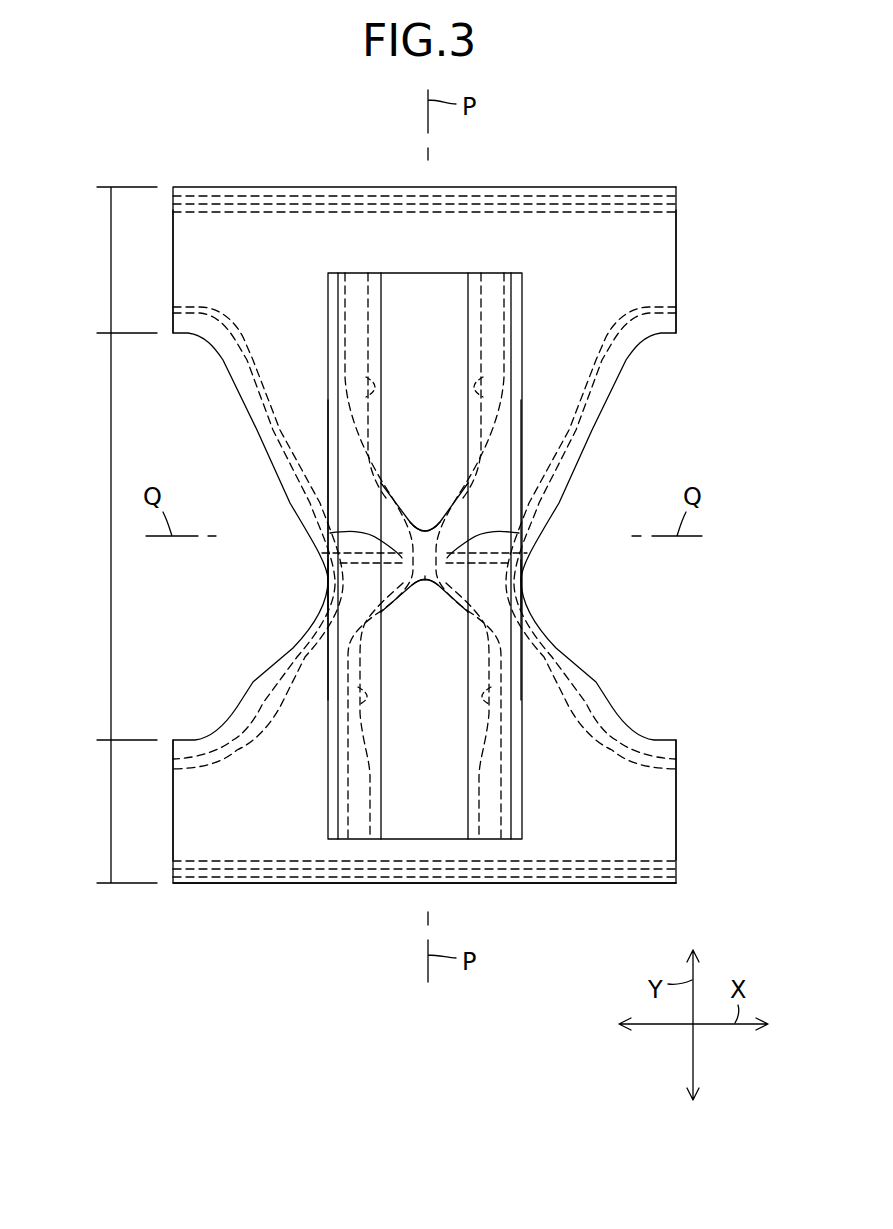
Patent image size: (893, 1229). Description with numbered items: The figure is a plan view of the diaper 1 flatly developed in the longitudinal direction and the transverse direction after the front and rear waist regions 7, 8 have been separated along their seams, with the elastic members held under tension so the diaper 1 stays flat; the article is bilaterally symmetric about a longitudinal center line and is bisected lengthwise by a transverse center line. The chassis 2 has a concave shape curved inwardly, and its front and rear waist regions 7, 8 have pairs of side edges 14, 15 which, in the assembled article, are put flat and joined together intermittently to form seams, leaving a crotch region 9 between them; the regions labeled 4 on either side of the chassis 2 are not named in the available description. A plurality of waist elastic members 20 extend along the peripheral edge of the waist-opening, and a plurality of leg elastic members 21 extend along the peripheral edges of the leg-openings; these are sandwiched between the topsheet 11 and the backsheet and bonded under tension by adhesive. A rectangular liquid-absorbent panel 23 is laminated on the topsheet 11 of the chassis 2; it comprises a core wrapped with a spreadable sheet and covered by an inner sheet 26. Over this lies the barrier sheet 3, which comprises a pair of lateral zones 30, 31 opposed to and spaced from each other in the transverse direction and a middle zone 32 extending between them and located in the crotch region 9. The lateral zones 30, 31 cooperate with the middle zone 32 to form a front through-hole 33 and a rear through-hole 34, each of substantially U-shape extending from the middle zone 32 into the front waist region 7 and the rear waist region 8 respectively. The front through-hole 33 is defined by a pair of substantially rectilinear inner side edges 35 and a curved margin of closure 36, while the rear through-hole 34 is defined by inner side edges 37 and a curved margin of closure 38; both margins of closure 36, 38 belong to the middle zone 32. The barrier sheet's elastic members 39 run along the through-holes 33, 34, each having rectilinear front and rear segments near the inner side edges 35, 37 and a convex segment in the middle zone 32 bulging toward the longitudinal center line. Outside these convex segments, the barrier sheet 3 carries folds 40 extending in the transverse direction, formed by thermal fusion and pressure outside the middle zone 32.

The diaper 1 is at (229, 109).
The chassis 2 is at (205, 163).
The barrier sheet 3 is at (423, 519).
The side flap 4 is at (348, 477).
The front waist region 7 is at (111, 808).
The rear waist region 8 is at (111, 260).
The crotch region 9 is at (111, 550).
The topsheet 11 is at (240, 850).
The side edges of front waist region 14 is at (178, 814).
The side edges of rear waist region 15 is at (176, 250).
The waist elastic members 20 is at (541, 205).
The leg elastic members 21 is at (268, 695).
The liquid-absorbent panel 23 is at (413, 259).
The inner sheet 26 is at (396, 282).
The lateral zone 30 is at (356, 581).
The lateral zone 31 is at (493, 581).
The middle zone 32 is at (421, 584).
The front through-hole 33 is at (401, 822).
The rear through-hole 34 is at (438, 303).
The inner side edges 35 is at (358, 703).
The curved margin of closure 36 is at (428, 584).
The inner side edges 37 is at (383, 383).
The curved margin of closure 38 is at (426, 532).
The barrier sheet's elastic members 39 is at (322, 564).
The folds 40 is at (330, 533).